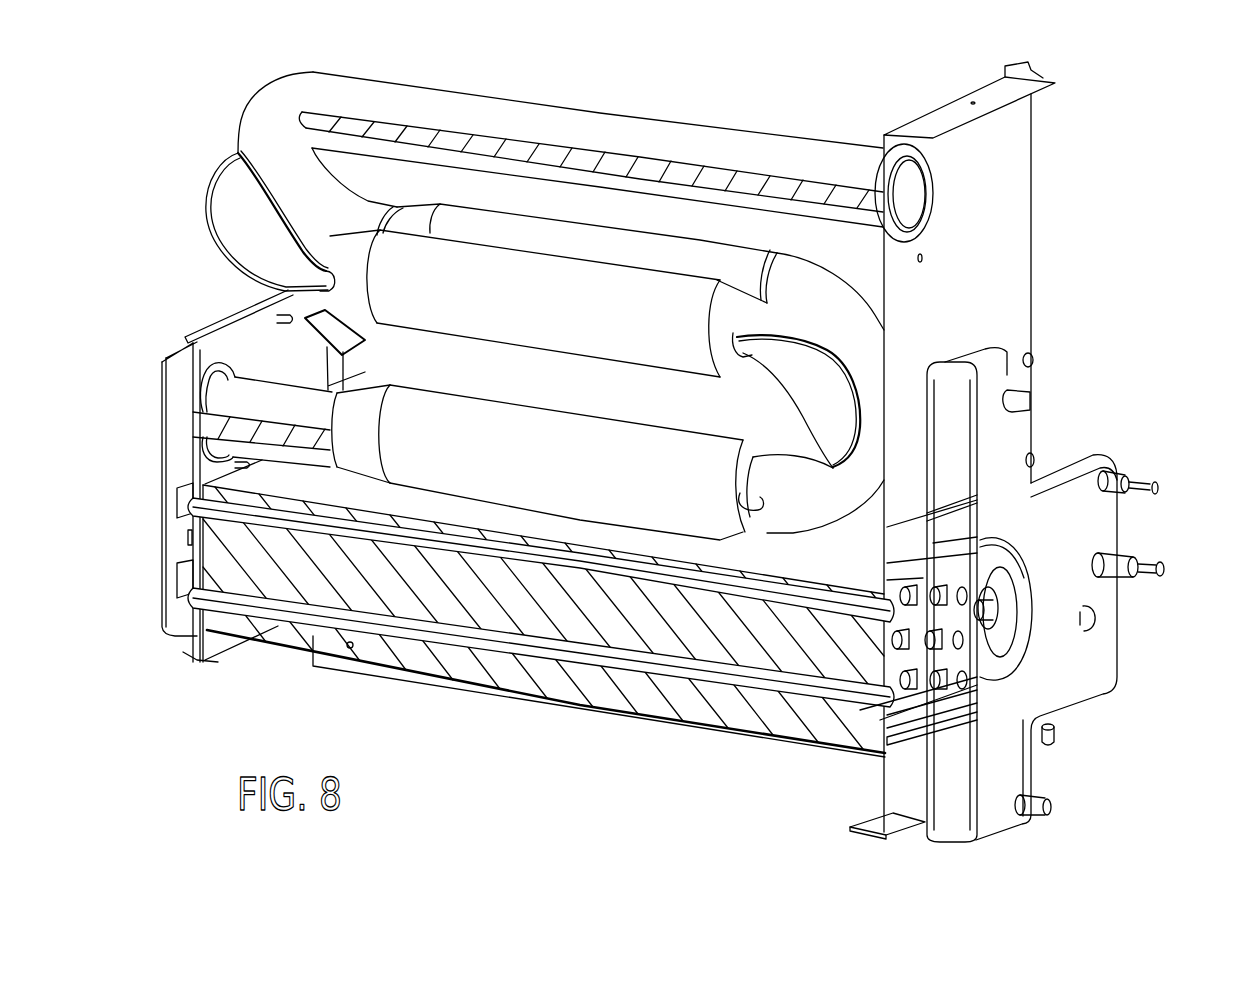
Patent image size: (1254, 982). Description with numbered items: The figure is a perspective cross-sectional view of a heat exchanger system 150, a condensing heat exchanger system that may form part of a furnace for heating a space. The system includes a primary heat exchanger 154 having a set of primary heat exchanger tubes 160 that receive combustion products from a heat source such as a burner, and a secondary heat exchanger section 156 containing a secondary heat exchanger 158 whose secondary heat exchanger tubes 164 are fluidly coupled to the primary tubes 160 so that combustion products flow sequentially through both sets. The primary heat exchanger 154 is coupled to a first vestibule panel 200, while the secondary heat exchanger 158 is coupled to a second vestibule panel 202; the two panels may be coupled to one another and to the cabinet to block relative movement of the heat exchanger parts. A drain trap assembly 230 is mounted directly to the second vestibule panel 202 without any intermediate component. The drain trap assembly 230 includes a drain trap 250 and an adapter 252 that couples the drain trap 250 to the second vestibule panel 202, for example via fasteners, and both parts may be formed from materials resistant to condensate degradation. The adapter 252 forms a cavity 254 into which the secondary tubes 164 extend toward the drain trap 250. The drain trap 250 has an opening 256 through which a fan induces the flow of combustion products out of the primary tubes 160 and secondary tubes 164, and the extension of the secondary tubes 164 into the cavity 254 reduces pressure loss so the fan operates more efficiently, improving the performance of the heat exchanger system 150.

The heat exchanger system 150 is at (668, 461).
The primary heat exchanger 154 is at (501, 300).
The secondary heat exchanger section 156 is at (708, 745).
The secondary heat exchanger 158 is at (602, 622).
The primary heat exchanger tubes 160 is at (598, 122).
The secondary heat exchanger tubes 164 is at (893, 637).
The first vestibule panel 200 is at (1015, 272).
The second vestibule panel 202 is at (893, 831).
The drain trap assembly 230 is at (988, 595).
The drain trap 250 is at (1082, 683).
The adapter 252 is at (920, 738).
The cavity 254 is at (880, 682).
The opening 256 is at (997, 617).